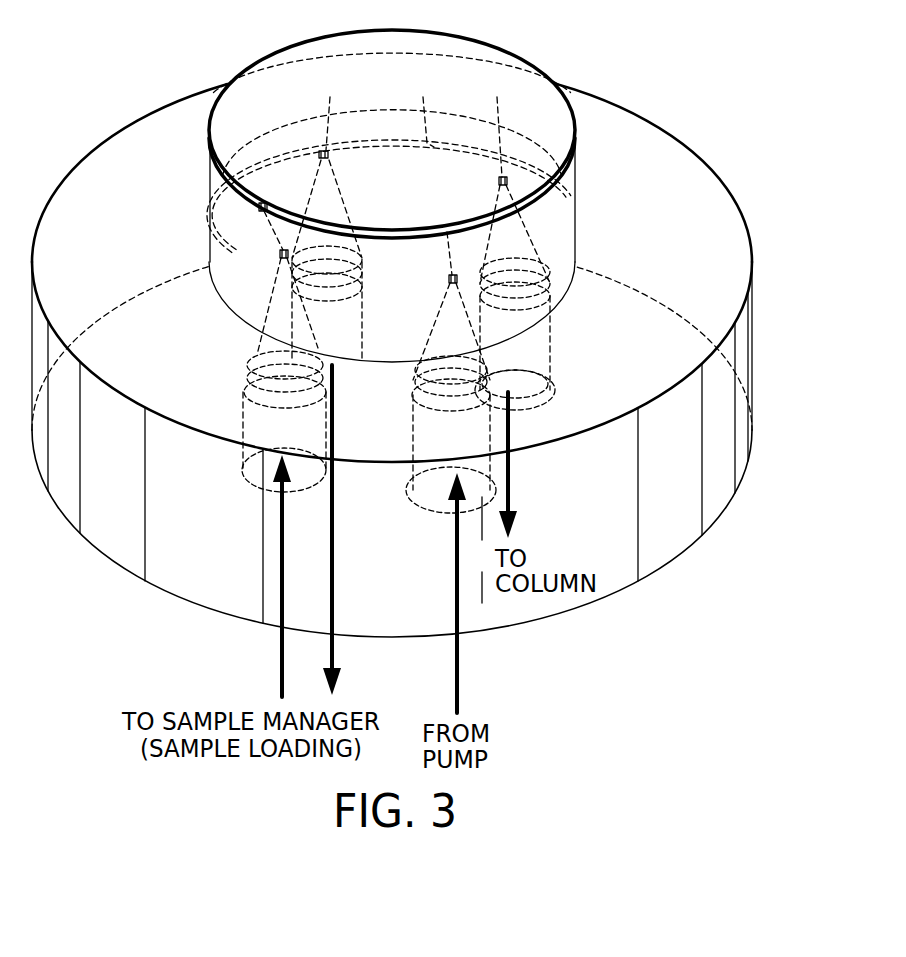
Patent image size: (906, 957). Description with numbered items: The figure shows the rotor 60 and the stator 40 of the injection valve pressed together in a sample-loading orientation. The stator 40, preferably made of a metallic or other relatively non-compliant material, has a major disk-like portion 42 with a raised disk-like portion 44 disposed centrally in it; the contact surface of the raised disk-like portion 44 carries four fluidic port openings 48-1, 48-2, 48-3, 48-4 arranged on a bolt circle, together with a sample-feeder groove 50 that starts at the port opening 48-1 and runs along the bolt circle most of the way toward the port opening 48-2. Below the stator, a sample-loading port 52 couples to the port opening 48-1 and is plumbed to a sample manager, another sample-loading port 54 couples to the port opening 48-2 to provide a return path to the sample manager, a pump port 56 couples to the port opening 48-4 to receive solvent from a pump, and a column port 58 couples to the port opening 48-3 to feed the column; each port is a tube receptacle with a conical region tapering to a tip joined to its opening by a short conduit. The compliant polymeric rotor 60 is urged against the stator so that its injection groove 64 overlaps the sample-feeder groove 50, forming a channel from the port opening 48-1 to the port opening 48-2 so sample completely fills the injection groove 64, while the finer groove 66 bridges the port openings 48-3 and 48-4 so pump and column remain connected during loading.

The stator 40 is at (680, 120).
The major disk-like portion 42 is at (714, 480).
The raised disk-like portion 44 is at (571, 272).
The port opening 48-1 is at (268, 241).
The port opening 48-2 is at (331, 97).
The port opening 48-3 is at (500, 100).
The port opening 48-4 is at (445, 262).
The sample-feeder groove 50 is at (258, 206).
The sample-loading port 52 is at (260, 408).
The sample-loading port 54 is at (340, 205).
The pump port 56 is at (422, 428).
The column port 58 is at (548, 352).
The rotor 60 is at (484, 56).
The injection groove 64 is at (300, 124).
The finer groove 66 is at (421, 97).